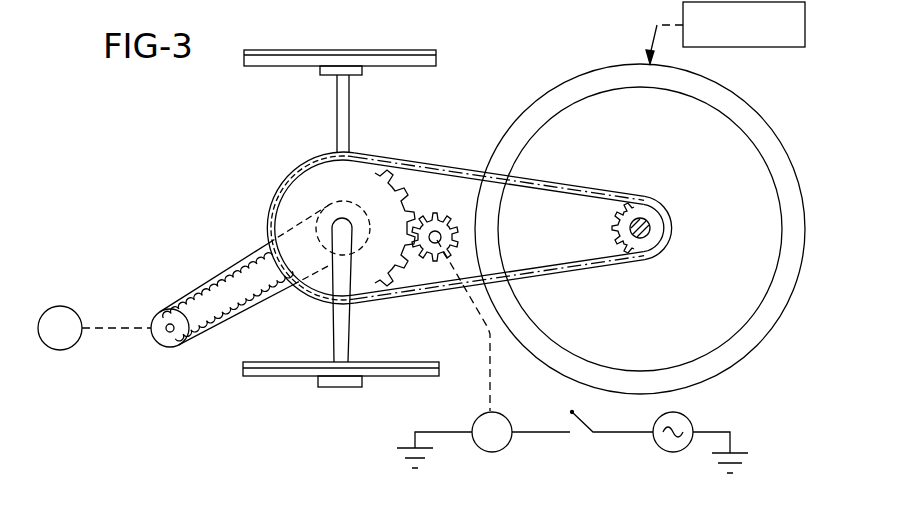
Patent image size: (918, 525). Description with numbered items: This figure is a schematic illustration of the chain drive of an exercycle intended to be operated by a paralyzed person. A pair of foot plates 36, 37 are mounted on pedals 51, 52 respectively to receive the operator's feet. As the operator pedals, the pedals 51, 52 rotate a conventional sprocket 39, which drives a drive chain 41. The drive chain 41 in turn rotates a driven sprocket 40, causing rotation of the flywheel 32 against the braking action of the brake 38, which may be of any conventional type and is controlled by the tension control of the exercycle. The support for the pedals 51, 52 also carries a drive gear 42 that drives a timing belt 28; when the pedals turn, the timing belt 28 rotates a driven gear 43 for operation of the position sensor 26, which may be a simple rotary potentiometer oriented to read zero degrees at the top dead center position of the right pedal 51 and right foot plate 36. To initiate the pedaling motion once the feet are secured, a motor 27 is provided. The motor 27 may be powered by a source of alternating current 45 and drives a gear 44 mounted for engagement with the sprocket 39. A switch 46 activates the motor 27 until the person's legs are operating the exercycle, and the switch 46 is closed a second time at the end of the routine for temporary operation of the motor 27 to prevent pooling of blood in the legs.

The position sensor 26 is at (72, 306).
The motor 27 is at (502, 451).
The timing belt 28 is at (222, 269).
The flywheel 32 is at (767, 125).
The foot plate 36 is at (243, 371).
The foot plate 37 is at (437, 58).
The brake 38 is at (755, 48).
The sprocket 39 is at (407, 299).
The driven sprocket 40 is at (610, 225).
The drive chain 41 is at (438, 291).
The drive gear 42 is at (330, 200).
The driven gear 43 is at (152, 317).
The gear 44 is at (437, 212).
The source of alternating current 45 is at (692, 420).
The switch 46 is at (567, 410).
The pedal 51 is at (318, 380).
The pedal 52 is at (364, 74).